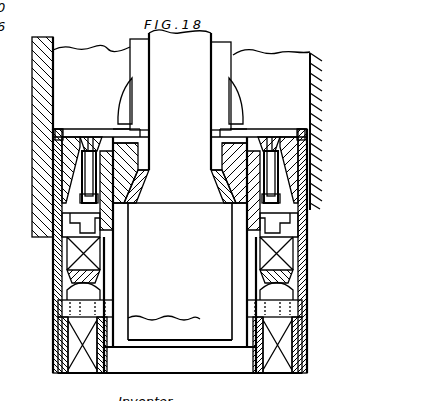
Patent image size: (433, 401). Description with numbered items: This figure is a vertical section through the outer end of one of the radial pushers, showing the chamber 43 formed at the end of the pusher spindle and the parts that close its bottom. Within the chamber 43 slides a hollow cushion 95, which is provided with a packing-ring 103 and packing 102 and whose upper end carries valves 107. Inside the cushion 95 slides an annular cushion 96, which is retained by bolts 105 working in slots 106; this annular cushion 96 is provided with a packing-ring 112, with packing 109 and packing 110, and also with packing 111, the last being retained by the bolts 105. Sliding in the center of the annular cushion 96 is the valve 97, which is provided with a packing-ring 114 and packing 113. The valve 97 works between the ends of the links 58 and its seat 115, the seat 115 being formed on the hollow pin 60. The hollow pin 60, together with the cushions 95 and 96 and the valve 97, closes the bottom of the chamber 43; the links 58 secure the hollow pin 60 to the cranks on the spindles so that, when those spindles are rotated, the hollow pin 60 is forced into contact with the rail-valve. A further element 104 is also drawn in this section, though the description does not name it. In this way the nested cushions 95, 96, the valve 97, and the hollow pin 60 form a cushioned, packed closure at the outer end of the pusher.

The chamber 43 is at (53, 78).
The links 58 is at (135, 81).
The hollow pin 60 is at (135, 298).
The cushion 95 is at (58, 274).
The annular cushion 96 is at (58, 359).
The valve 97 is at (138, 200).
The packing 102 is at (58, 160).
The packing-ring 103 is at (53, 128).
The lower spring 104 is at (55, 330).
The bolts 105 is at (196, 320).
The slots 106 is at (58, 297).
The valves 107 is at (90, 133).
The packing 109 is at (58, 250).
The packing 110 is at (113, 257).
The packing 111 is at (85, 361).
The packing-ring 112 is at (113, 219).
The packing 113 is at (148, 180).
The packing-ring 114 is at (141, 153).
The seat 115 is at (206, 203).